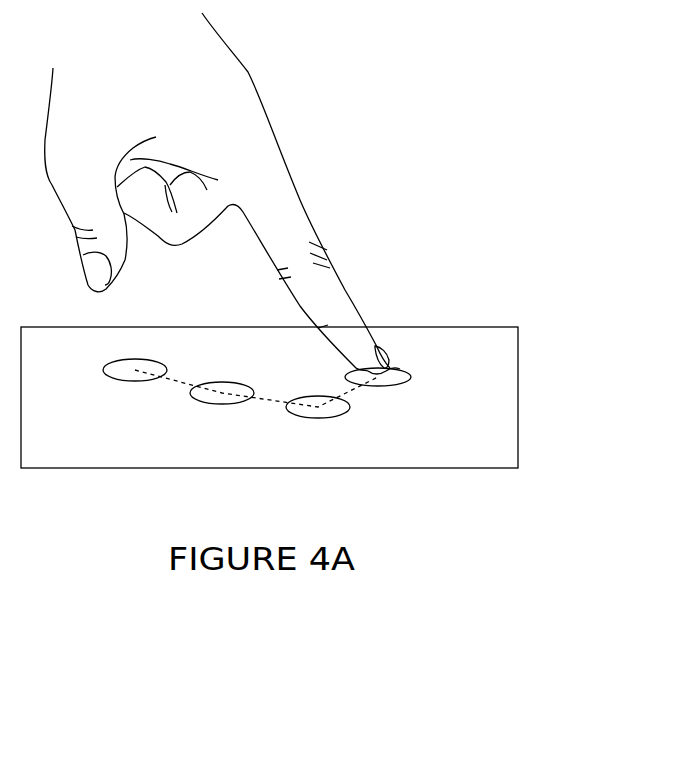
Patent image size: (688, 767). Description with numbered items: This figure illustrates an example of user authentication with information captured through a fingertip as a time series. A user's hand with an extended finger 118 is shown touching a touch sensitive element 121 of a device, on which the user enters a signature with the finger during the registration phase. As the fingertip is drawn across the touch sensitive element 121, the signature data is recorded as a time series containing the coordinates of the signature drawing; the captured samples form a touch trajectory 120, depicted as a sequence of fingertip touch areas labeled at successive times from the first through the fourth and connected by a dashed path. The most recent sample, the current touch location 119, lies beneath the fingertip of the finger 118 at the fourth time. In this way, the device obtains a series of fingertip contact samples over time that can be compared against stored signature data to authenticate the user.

The hand / finger 118 is at (288, 165).
The current touch location 119 is at (411, 373).
The touch trajectory / touch points 120 is at (322, 436).
The touch-sensitive surface 121 is at (518, 410).